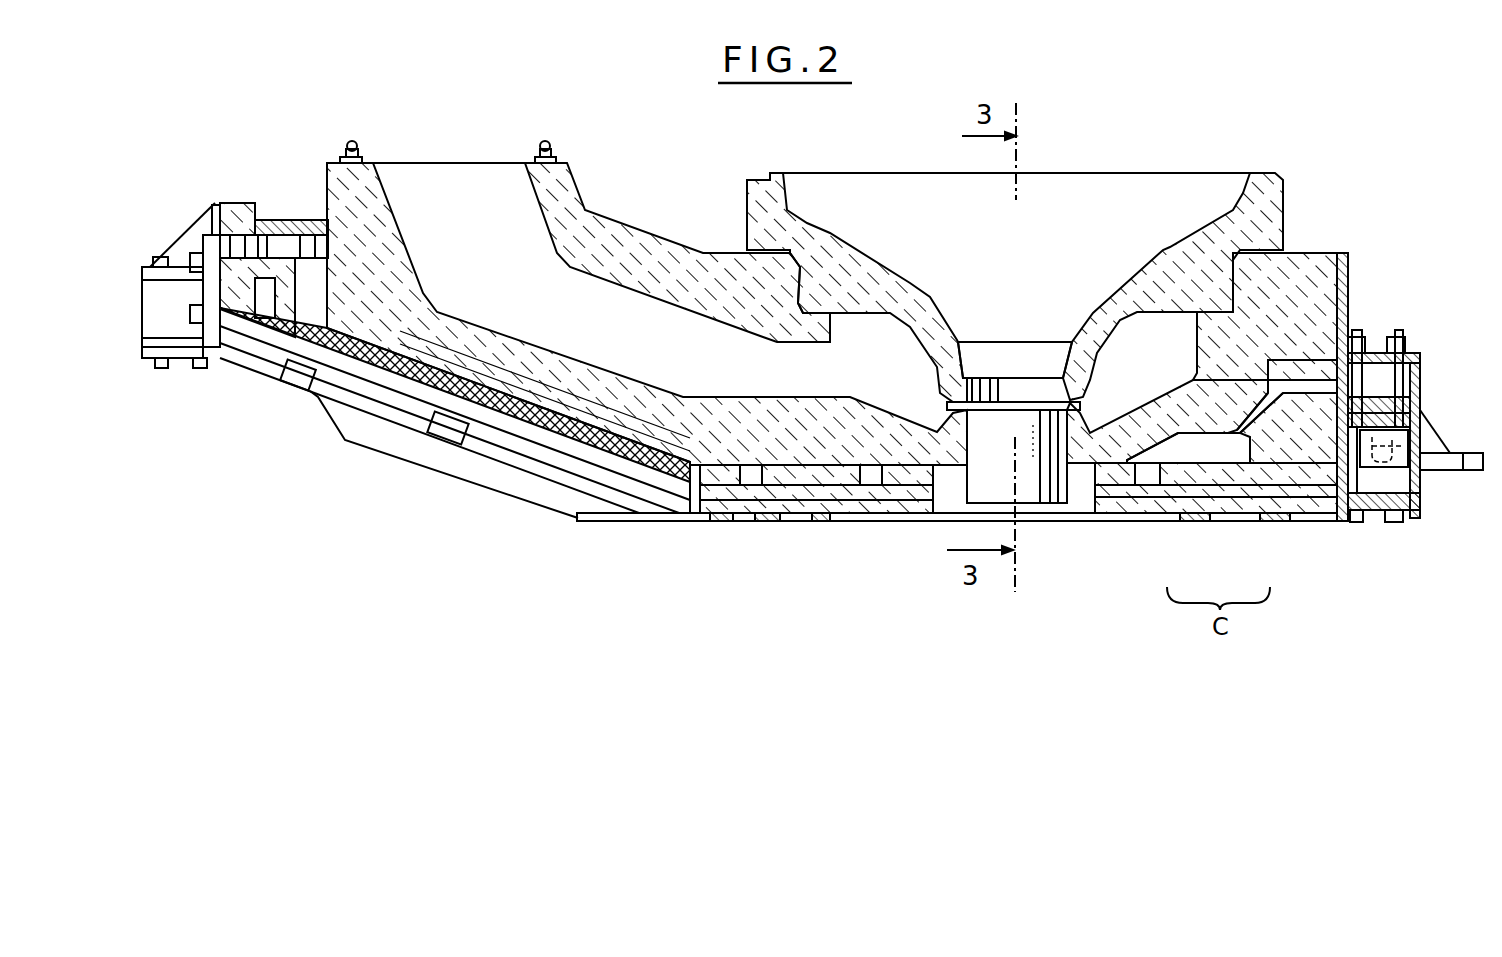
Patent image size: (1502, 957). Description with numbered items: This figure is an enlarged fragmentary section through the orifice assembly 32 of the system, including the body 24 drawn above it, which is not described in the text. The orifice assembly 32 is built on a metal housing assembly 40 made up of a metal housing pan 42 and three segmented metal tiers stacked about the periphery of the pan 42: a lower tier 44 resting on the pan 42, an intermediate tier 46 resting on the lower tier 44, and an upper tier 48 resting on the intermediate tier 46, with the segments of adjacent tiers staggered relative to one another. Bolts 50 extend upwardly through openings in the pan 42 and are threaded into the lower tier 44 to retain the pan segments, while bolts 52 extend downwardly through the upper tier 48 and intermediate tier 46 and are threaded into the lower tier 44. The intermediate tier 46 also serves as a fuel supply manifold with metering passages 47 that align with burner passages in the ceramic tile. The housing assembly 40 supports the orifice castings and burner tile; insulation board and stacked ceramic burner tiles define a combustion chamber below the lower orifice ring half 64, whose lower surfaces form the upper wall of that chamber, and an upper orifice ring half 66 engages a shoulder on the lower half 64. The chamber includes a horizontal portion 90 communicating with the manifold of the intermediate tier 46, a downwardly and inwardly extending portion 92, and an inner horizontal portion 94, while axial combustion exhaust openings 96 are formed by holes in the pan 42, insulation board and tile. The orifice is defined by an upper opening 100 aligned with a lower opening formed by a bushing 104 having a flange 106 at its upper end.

The main body / base casting 24 is at (466, 186).
The orifice assembly 32 is at (904, 549).
The metal housing assembly 40 is at (1418, 401).
The metal housing pan 42 is at (1303, 516).
The lower tier 44 is at (1420, 447).
The intermediate tier 46 is at (1420, 387).
The metering passages 47 is at (1329, 382).
The upper tier 48 is at (1354, 268).
The bolts 50 is at (1398, 524).
The bolts 52 is at (1398, 338).
The lower orifice ring half 64 is at (1263, 277).
The upper orifice ring half 66 is at (1268, 187).
The horizontal portion 90 is at (1321, 397).
The downwardly and inwardly extending portion 92 is at (1244, 444).
The horizontal portion 94 is at (1183, 458).
The axial combustion exhaust openings 96 is at (1137, 512).
The upper openings 100 is at (1053, 392).
The bushing 104 is at (1037, 503).
The flange 106 is at (955, 408).